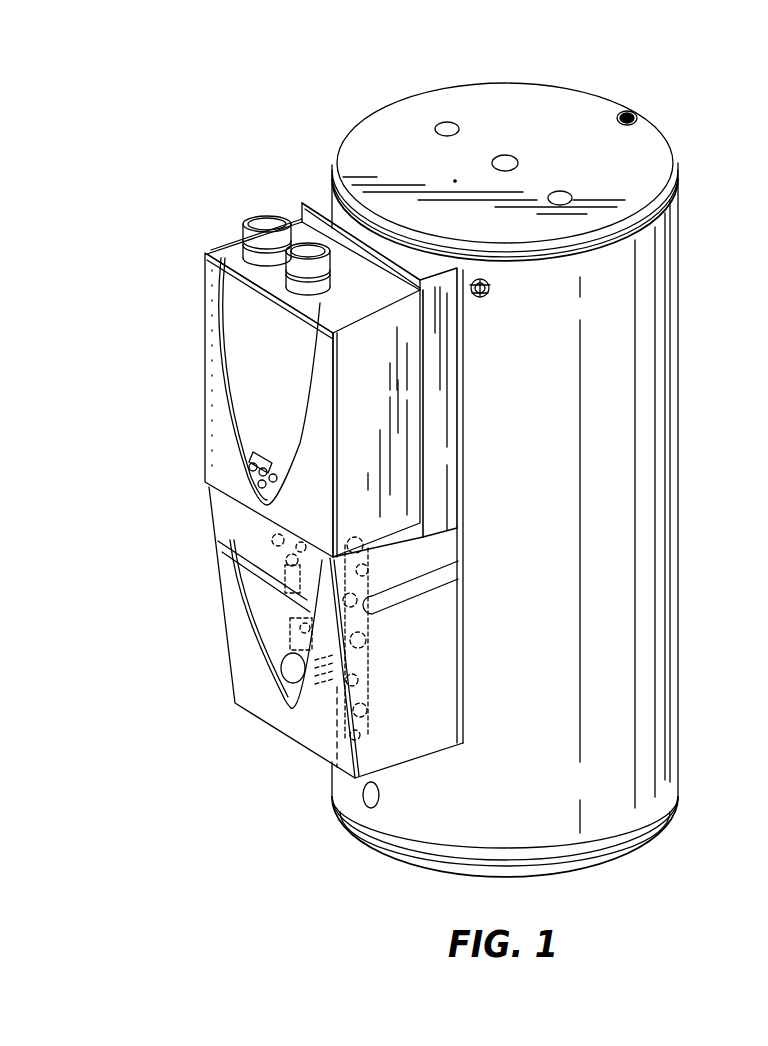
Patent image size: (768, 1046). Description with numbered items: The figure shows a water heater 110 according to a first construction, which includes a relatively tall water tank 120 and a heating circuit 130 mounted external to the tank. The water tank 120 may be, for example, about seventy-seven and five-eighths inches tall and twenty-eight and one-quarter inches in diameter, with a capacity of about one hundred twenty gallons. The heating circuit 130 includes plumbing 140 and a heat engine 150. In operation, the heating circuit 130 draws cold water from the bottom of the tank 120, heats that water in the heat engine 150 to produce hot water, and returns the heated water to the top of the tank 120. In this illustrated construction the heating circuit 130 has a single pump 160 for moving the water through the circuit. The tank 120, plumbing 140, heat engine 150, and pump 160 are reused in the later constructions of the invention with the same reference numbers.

The water heater 110 is at (434, 458).
The water tank 120 is at (648, 283).
The heating circuit 130 is at (282, 490).
The plumbing 140 is at (311, 632).
The heat engine 150 is at (220, 455).
The pump 160 is at (285, 680).